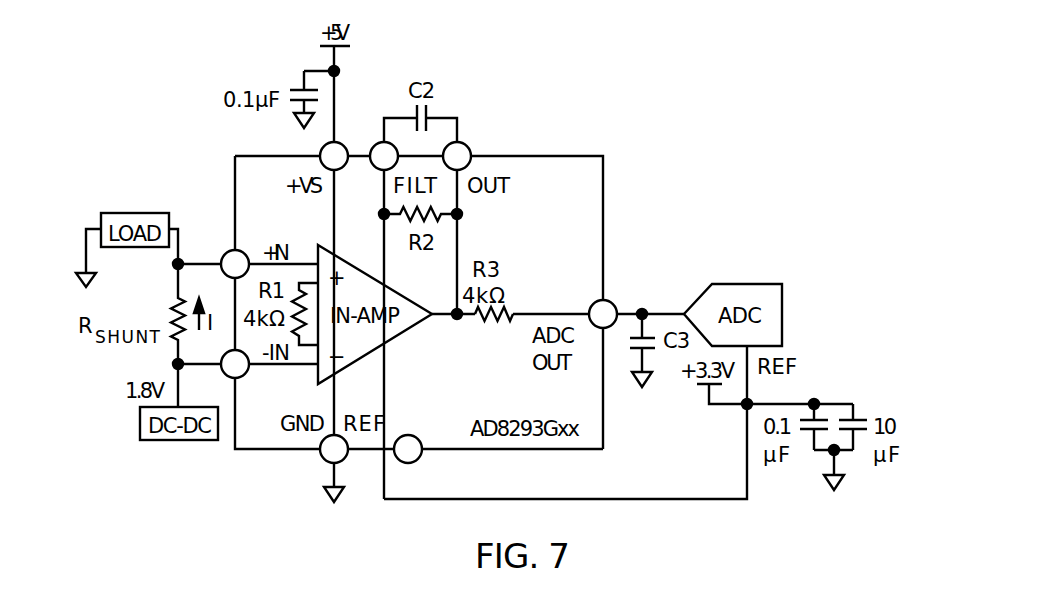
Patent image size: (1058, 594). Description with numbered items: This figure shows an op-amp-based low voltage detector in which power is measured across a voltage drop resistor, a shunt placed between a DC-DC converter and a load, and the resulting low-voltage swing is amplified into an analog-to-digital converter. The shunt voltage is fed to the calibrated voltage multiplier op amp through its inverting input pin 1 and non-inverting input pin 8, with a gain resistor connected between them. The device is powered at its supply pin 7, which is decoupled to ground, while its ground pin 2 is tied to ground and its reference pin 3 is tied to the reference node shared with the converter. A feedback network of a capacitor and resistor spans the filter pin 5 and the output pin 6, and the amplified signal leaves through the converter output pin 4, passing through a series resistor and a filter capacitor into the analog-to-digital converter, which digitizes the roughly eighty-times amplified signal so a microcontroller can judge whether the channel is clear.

The -IN pin 1 is at (235, 364).
The GND pin 2 is at (334, 449).
The REF pin 3 is at (408, 449).
The ADC OUT pin 4 is at (603, 314).
The FILT pin 5 is at (384, 156).
The OUT pin 6 is at (457, 156).
The +VS pin 7 is at (334, 156).
The +IN pin 8 is at (235, 264).